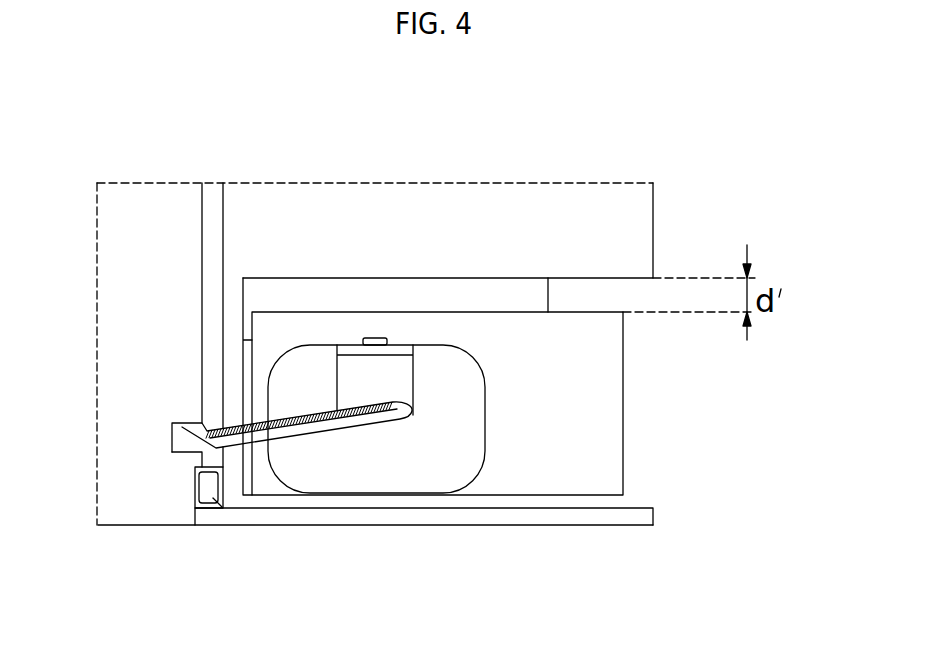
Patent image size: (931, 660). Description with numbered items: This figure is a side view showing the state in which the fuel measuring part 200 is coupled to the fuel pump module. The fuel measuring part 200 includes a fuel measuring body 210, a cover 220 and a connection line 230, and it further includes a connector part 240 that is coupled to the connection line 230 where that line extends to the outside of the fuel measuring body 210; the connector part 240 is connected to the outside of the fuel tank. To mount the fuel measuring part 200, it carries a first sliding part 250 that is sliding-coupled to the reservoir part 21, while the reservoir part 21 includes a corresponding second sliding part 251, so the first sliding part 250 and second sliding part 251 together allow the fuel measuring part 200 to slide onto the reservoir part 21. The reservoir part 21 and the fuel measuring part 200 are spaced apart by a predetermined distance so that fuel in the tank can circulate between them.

The reservoir part 21 is at (621, 241).
The fuel measuring part 200 is at (690, 368).
The fuel measuring body 210 is at (592, 432).
The cover 220 is at (615, 503).
The connection line 230 is at (317, 427).
The connector part 240 is at (442, 427).
The first sliding part 250 is at (206, 497).
The second sliding part 251 is at (232, 480).